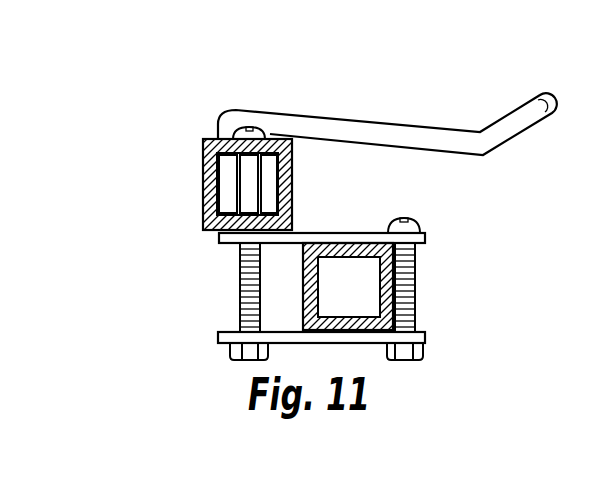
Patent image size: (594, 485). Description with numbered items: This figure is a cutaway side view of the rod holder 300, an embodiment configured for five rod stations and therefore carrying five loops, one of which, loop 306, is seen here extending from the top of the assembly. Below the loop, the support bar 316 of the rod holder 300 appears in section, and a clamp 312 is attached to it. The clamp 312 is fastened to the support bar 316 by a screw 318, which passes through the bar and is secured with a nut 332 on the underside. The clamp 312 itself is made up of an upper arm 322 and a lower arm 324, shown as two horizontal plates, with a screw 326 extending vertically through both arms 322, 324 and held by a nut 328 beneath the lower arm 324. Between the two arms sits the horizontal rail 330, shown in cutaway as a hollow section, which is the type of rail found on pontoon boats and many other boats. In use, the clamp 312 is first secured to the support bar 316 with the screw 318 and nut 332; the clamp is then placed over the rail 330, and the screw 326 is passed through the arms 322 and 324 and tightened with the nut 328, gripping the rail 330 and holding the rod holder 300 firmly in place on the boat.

The rod holder 300 is at (222, 115).
The loop 306 is at (370, 127).
The clamp 312 is at (418, 288).
The support bar 316 is at (293, 192).
The screw 318 is at (248, 186).
The upper arm 322 is at (355, 236).
The lower arm 324 is at (360, 335).
The screw 326 is at (420, 225).
The nut 328 is at (420, 357).
The horizontal rail 330 is at (388, 268).
The nut 332 is at (234, 360).